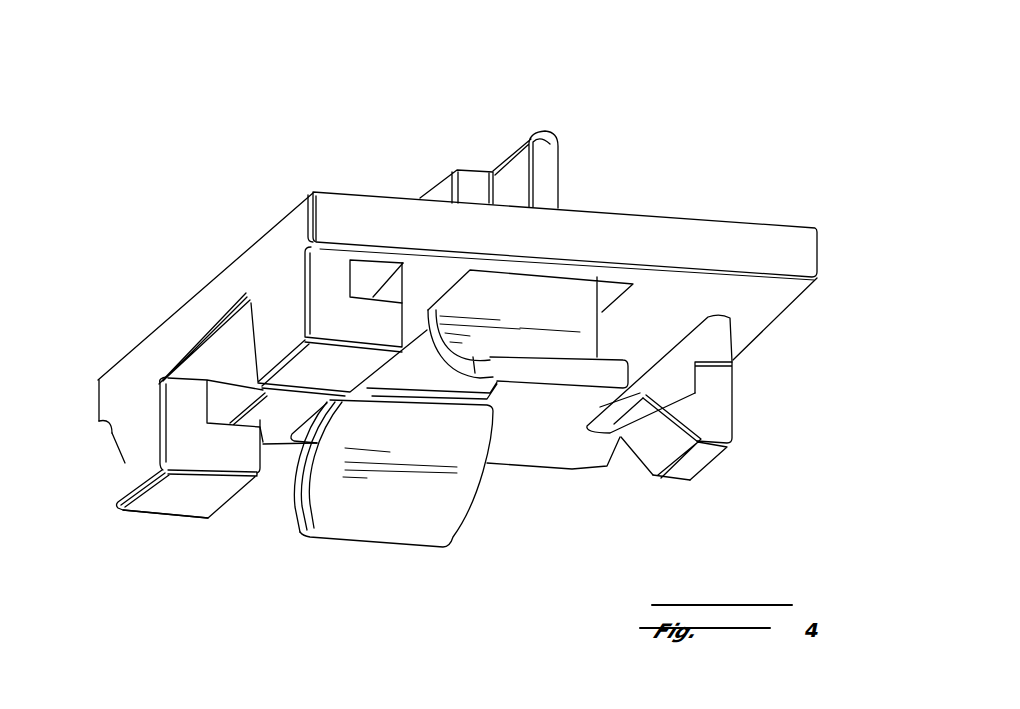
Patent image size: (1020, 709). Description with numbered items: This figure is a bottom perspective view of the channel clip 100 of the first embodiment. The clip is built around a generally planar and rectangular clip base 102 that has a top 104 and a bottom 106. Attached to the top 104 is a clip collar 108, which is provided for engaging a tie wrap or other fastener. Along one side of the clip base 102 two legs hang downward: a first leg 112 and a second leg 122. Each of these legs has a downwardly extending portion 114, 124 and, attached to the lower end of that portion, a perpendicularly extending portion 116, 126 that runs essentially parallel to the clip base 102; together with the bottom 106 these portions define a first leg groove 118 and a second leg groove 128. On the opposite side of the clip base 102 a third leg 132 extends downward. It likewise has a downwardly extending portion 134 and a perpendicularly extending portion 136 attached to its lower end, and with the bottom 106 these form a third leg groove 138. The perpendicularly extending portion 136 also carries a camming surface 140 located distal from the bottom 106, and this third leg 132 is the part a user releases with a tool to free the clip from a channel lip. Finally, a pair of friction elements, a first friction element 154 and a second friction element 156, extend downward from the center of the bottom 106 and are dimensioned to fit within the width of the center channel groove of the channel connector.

The channel clip 100 is at (752, 150).
The clip base 102 is at (820, 247).
The top 104 is at (600, 209).
The bottom 106 is at (763, 297).
The clip collar 108 is at (477, 170).
The first leg 112 is at (257, 360).
The downwardly extending portion 114 is at (277, 297).
The perpendicularly extending portion 116 is at (326, 278).
The first leg groove 118 is at (362, 273).
The second leg 122 is at (122, 507).
The downwardly extending portion 124 is at (127, 463).
The perpendicularly extending portion 126 is at (182, 495).
The second leg groove 128 is at (207, 420).
The third leg 132 is at (730, 445).
The downwardly extending portion 134 is at (718, 385).
The perpendicularly extending portion 136 is at (695, 465).
The third leg groove 138 is at (732, 435).
The camming surface 140 is at (647, 445).
The first friction element 154 is at (572, 373).
The second friction element 156 is at (380, 528).